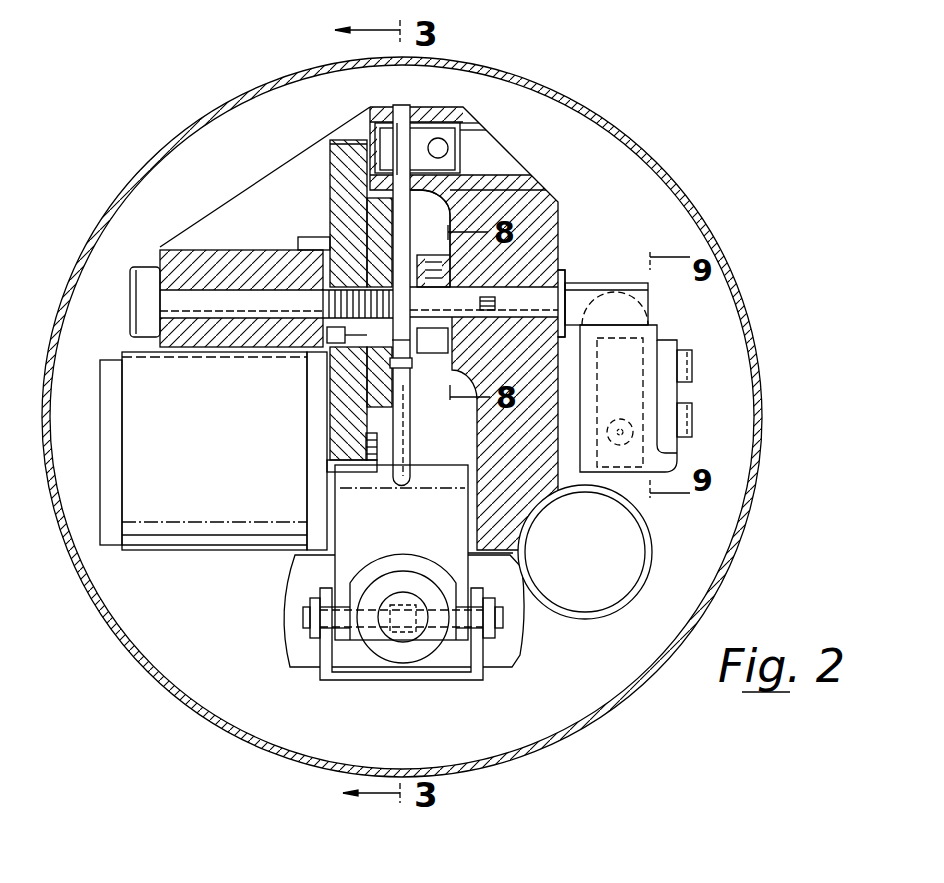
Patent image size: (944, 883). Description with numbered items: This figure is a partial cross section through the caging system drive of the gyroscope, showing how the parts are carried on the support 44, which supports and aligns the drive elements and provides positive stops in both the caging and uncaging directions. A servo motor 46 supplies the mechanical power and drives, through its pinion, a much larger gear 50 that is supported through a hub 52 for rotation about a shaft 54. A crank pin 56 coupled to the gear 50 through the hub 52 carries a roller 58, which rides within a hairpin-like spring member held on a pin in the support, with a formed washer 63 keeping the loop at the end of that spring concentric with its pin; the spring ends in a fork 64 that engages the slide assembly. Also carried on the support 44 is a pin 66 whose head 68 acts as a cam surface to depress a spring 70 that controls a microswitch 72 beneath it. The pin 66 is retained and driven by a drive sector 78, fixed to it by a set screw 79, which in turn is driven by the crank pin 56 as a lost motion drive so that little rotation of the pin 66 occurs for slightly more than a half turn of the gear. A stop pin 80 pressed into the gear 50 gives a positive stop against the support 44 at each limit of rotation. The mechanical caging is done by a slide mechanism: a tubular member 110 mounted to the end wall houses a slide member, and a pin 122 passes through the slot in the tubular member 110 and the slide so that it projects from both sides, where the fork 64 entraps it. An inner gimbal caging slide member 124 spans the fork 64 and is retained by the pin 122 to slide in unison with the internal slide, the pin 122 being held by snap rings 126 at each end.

The support 44 is at (530, 193).
The motor 46 is at (232, 484).
The gear 50 is at (343, 150).
The hub 52 is at (352, 257).
The shaft 54 is at (190, 297).
The crank pin 56 is at (357, 337).
The roller 58 is at (397, 341).
The formed washer 63 is at (405, 108).
The fork 64 is at (373, 537).
The pin 66 is at (513, 293).
The head 68 is at (602, 283).
The spring 70 is at (658, 338).
The microswitch 72 is at (632, 403).
The drive sector 78 is at (412, 246).
The set screw 79 is at (437, 265).
The stop pin 80 is at (306, 237).
The tubular member 110 is at (423, 653).
The pin 122 is at (393, 620).
The inner gimbal caging slide member 124 is at (338, 680).
The snap rings 126 is at (315, 639).